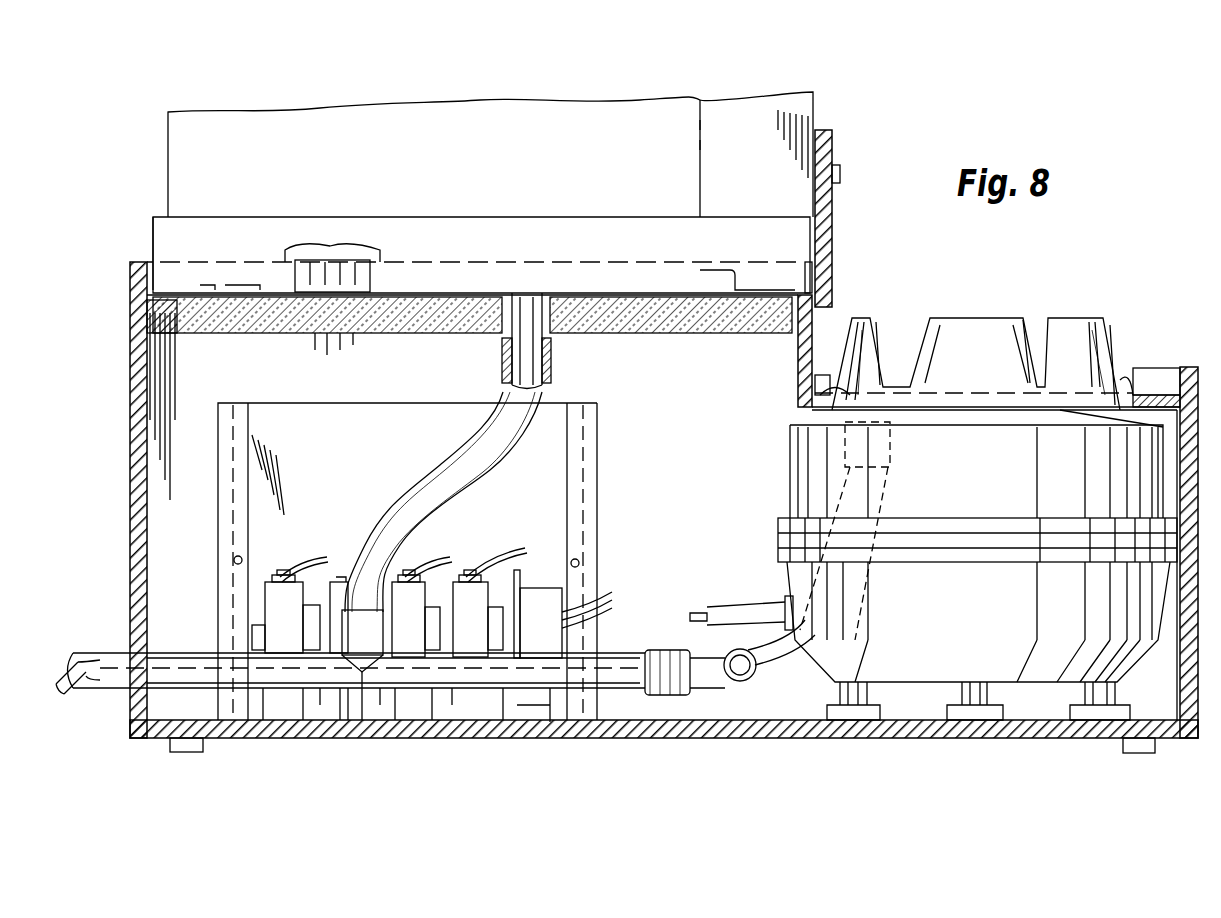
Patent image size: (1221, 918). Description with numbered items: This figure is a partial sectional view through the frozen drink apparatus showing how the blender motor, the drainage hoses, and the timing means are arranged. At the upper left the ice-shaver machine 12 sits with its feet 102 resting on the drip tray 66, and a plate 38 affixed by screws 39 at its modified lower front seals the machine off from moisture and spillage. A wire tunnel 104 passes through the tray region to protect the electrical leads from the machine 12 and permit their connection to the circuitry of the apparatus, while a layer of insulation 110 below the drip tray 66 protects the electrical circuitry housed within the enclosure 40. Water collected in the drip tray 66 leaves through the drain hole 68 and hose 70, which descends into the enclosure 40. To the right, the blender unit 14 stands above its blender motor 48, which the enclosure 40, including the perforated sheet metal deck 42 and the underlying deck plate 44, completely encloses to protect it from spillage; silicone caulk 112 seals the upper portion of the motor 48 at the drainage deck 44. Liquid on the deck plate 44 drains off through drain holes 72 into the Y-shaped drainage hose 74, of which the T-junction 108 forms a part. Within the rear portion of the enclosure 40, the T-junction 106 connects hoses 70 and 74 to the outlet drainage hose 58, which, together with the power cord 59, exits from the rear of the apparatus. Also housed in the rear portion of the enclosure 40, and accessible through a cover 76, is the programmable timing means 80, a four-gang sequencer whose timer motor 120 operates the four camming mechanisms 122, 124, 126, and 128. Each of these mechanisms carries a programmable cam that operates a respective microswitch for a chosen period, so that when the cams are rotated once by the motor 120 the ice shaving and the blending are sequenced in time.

The ice-shaver machine 12 is at (168, 163).
The blender unit 14 is at (993, 316).
The plate 38 is at (832, 228).
The screws 39 is at (840, 176).
The enclosure 40 is at (1198, 388).
The perforated sheet metal deck 42 is at (1160, 400).
The deck plate 44 is at (1148, 393).
The blender motor 48 is at (948, 628).
The outlet drainage hose 58 is at (113, 690).
The power cord 59 is at (68, 684).
The drip tray 66 is at (650, 293).
The drain hole 68 is at (528, 293).
The hose 70 is at (420, 487).
The drain holes 72 is at (876, 455).
The Y-shaped drainage hose 74 is at (622, 690).
The cover 76 is at (525, 518).
The programmable timing means 80 is at (548, 556).
The feet 102 is at (212, 285).
The wire tunnel 104 is at (373, 277).
The T-junction 106 is at (390, 705).
The T-junction 108 is at (725, 672).
The layer of insulation 110 is at (200, 333).
The silicone caulk 112 is at (1123, 390).
The timer motor 120 is at (563, 602).
The camming mechanism 122 is at (475, 710).
The camming mechanism 124 is at (412, 707).
The camming mechanism 126 is at (347, 705).
The camming mechanism 128 is at (280, 705).